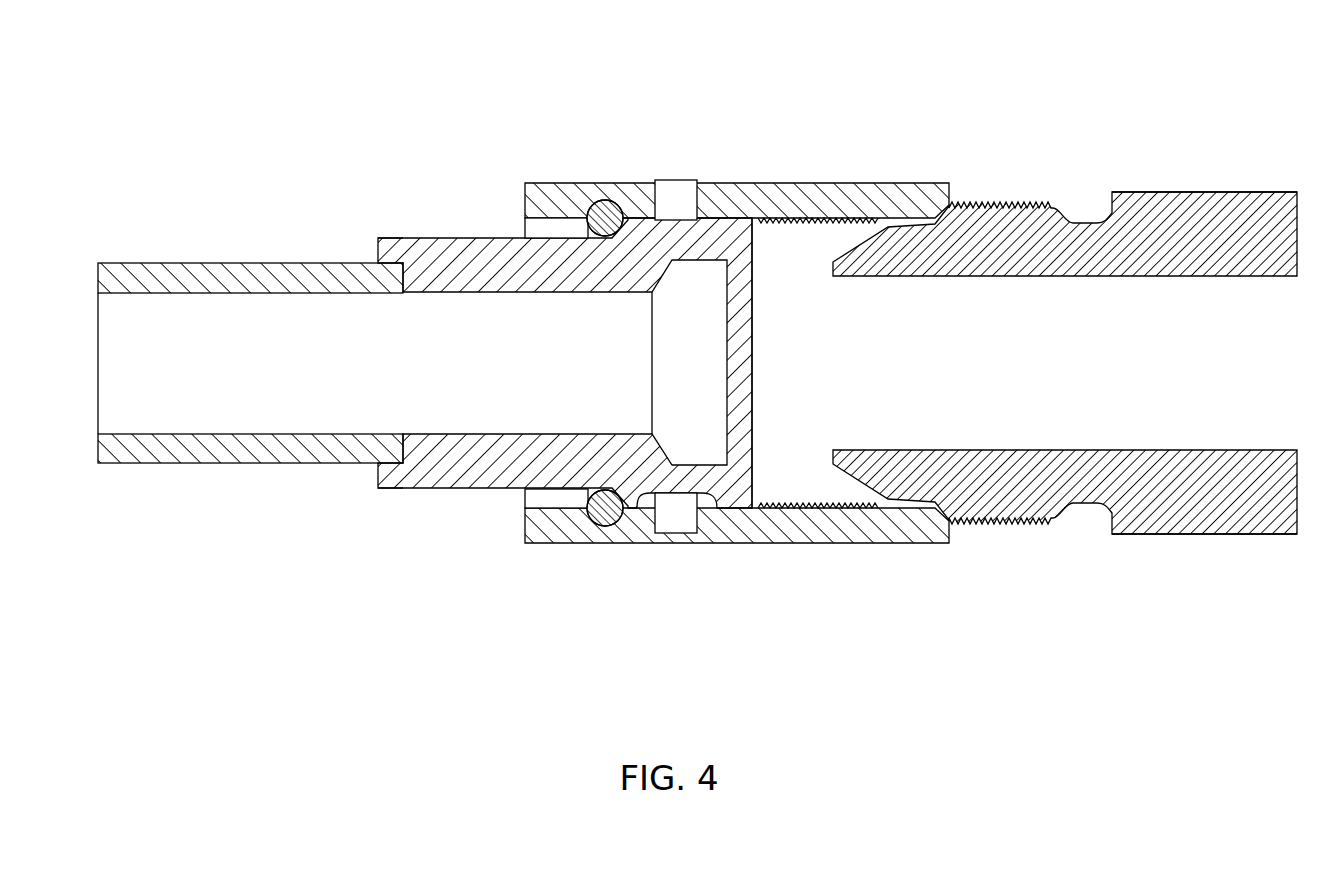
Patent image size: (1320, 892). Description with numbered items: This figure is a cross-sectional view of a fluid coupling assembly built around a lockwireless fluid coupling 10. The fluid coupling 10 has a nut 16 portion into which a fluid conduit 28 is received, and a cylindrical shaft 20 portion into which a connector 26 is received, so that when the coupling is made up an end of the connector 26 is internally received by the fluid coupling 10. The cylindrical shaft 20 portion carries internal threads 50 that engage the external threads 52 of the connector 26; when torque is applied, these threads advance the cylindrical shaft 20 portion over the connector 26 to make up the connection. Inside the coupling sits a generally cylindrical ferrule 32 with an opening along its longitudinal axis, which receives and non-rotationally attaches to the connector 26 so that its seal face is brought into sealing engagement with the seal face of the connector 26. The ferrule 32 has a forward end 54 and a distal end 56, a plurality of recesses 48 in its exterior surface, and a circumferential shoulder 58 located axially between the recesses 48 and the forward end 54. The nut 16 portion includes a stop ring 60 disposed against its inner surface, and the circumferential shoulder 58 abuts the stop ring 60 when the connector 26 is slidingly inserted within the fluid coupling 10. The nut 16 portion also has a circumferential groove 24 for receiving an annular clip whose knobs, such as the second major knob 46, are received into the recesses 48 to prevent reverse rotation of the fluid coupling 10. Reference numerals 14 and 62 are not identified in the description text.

The fluid coupling 10 is at (869, 558).
The locking key 14 is at (678, 186).
The nut portion 16 is at (690, 156).
The cylindrical shaft portion 20 is at (1065, 312).
The circumferential groove 24 is at (703, 523).
The connector 26 is at (1183, 193).
The fluid conduit 28 is at (207, 450).
The ferrule 32 is at (566, 345).
The second major knob 46 is at (664, 530).
The recesses 48 is at (607, 526).
The internal threads 50 is at (823, 216).
The external threads 52 is at (1008, 203).
The forward end 54 is at (381, 237).
The distal end 56 is at (745, 216).
The circumferential shoulder 58 is at (616, 208).
The stop ring 60 is at (622, 204).
The annular gap 62 is at (525, 225).